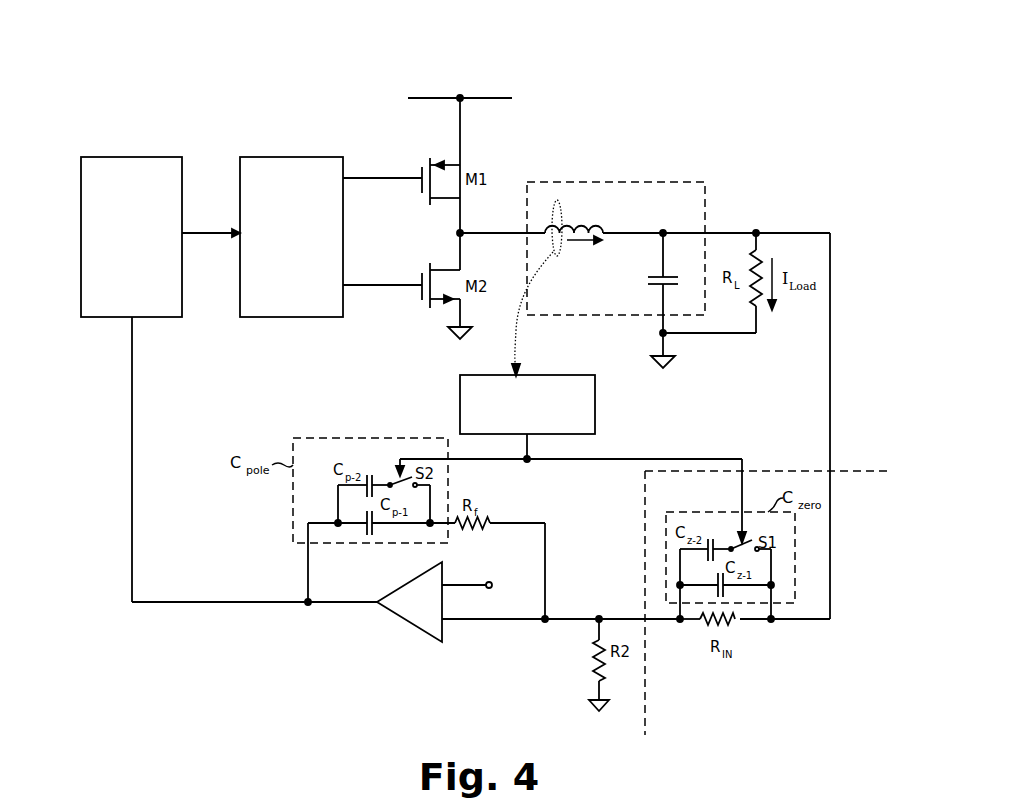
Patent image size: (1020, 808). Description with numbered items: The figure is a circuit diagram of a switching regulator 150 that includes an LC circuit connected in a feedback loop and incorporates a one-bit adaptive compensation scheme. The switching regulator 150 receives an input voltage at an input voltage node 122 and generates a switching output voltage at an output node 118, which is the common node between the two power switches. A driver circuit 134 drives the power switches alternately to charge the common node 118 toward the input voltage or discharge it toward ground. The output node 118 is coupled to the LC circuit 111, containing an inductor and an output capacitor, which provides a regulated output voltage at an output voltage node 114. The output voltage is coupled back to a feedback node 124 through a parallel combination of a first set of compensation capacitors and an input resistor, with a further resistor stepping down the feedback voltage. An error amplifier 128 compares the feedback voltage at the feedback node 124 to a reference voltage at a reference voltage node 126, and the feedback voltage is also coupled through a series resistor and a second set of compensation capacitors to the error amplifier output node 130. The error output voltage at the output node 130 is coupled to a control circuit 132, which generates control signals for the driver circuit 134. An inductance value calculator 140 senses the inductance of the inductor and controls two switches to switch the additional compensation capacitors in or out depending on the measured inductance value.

The switching regulator 150 is at (709, 76).
The input voltage node 122 is at (500, 97).
The control circuit 132 is at (81, 181).
The driver circuit 134 is at (248, 318).
The output node 118 is at (459, 233).
The LC circuit 111 is at (662, 181).
The output voltage node 114 is at (814, 232).
The inductance value calculator 140 is at (460, 394).
The reference voltage node 126 is at (487, 583).
The error amplifier output node 130 is at (190, 606).
The error amplifier 128 is at (384, 606).
The feedback node 124 is at (548, 624).